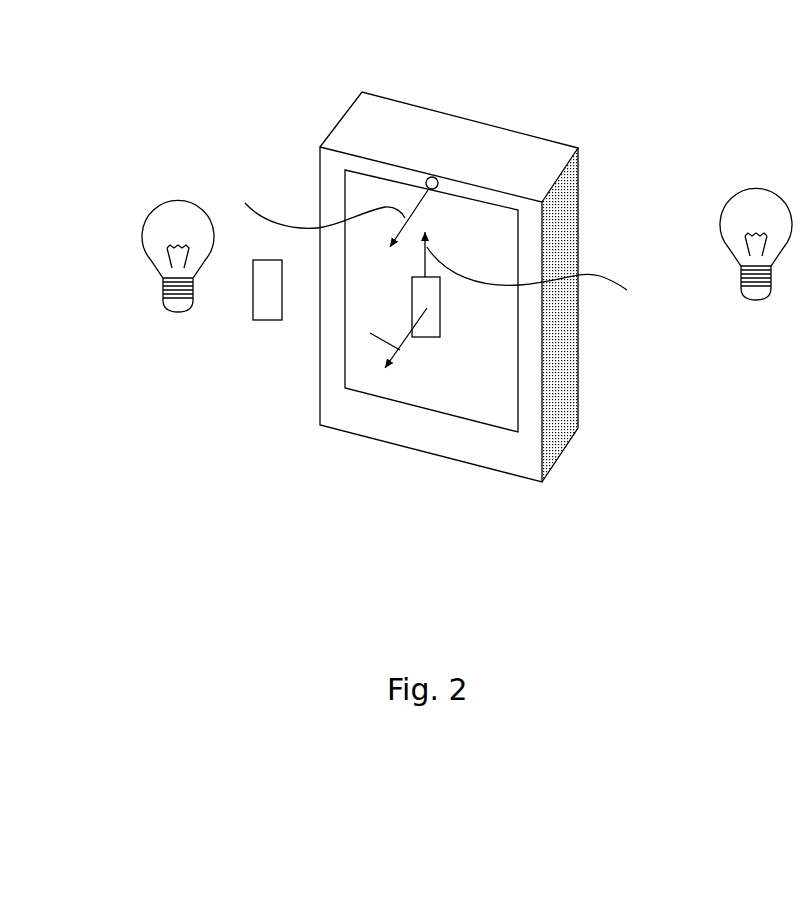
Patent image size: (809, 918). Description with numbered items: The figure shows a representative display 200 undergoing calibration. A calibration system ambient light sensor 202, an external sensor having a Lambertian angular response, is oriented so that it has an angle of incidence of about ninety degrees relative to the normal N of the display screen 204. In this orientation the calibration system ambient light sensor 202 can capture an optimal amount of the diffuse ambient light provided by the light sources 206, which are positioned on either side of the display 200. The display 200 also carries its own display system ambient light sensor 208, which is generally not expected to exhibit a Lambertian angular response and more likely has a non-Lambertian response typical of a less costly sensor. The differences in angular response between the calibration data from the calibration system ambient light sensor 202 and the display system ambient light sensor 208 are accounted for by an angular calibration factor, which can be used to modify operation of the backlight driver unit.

The display 200 is at (303, 462).
The calibration system ambient light sensor 202 is at (442, 343).
The display screen 204 is at (431, 301).
The light sources 206 is at (153, 297).
The display system ambient light sensor 208 is at (432, 172).